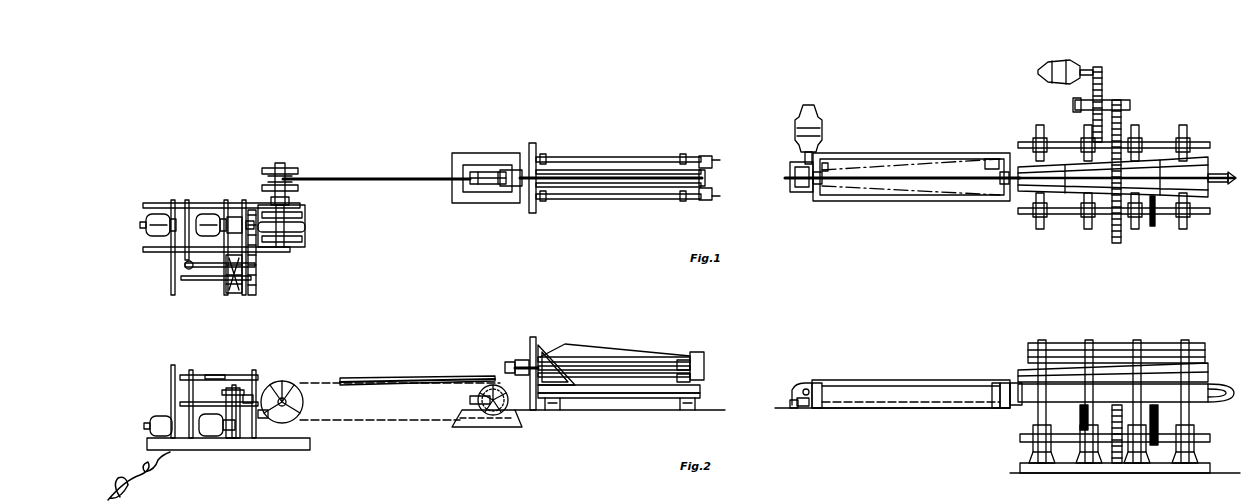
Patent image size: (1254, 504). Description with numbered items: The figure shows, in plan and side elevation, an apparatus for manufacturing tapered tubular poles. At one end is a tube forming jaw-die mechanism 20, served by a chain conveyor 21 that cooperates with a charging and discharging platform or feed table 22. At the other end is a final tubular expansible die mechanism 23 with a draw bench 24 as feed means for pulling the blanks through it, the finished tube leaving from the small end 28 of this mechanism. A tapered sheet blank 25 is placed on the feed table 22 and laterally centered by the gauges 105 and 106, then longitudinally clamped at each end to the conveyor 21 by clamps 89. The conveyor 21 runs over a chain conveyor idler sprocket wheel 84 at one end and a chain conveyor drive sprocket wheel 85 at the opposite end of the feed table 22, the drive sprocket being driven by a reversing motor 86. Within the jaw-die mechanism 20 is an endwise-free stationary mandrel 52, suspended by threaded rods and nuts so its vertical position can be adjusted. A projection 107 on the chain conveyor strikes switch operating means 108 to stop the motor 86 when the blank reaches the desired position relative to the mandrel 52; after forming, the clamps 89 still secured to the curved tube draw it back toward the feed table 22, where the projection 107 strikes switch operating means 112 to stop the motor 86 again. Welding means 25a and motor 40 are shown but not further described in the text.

In FIG. 1, the tube forming jaw-die mechanism 20 is at (1093, 243).
In FIG. 2, the tube forming jaw-die mechanism 20 is at (1105, 340).
In FIG. 1, the chain conveyor 21 is at (908, 177).
In FIG. 2, the chain conveyor 21 is at (885, 405).
In FIG. 1, the feed table 22 is at (896, 156).
In FIG. 2, the feed table 22 is at (882, 378).
In FIG. 1, the final tubular expansible die mechanism 23 is at (604, 155).
In FIG. 2, the final tubular expansible die mechanism 23 is at (604, 344).
In FIG. 1, the draw bench 24 is at (330, 192).
In FIG. 2, the draw bench 24 is at (312, 372).
In FIG. 1, the sheet blank 25 is at (940, 193).
In FIG. 2, the support post 25a is at (510, 362).
In FIG. 1, the small end 28 is at (517, 203).
In FIG. 1, the motor 40 is at (1062, 60).
In FIG. 1, the stationary mandrel 52 is at (1212, 160).
In FIG. 2, the stationary mandrel 52 is at (1208, 364).
In FIG. 1, the chain conveyor idler sprocket wheel 84 is at (1230, 186).
In FIG. 2, the chain conveyor idler sprocket wheel 84 is at (1228, 402).
In FIG. 1, the chain conveyor drive sprocket wheel 85 is at (793, 186).
In FIG. 2, the chain conveyor drive sprocket wheel 85 is at (800, 384).
In FIG. 1, the reversing motor 86 is at (802, 108).
In FIG. 1, the clamps 89 is at (816, 188).
In FIG. 1, the gauge 105 is at (829, 164).
In FIG. 1, the gauge 106 is at (990, 160).
In FIG. 2, the projection 107 is at (995, 408).
In FIG. 2, the switch operating means 108 is at (790, 403).
In FIG. 2, the switch operating means 112 is at (1012, 405).